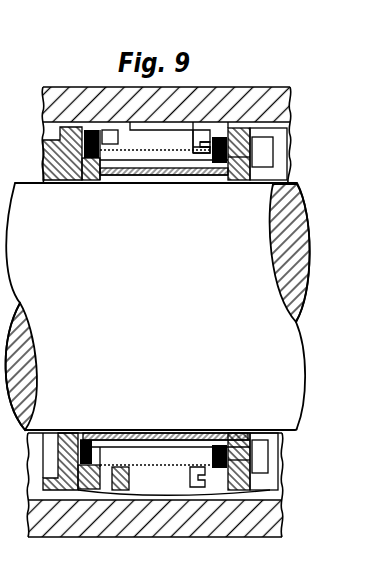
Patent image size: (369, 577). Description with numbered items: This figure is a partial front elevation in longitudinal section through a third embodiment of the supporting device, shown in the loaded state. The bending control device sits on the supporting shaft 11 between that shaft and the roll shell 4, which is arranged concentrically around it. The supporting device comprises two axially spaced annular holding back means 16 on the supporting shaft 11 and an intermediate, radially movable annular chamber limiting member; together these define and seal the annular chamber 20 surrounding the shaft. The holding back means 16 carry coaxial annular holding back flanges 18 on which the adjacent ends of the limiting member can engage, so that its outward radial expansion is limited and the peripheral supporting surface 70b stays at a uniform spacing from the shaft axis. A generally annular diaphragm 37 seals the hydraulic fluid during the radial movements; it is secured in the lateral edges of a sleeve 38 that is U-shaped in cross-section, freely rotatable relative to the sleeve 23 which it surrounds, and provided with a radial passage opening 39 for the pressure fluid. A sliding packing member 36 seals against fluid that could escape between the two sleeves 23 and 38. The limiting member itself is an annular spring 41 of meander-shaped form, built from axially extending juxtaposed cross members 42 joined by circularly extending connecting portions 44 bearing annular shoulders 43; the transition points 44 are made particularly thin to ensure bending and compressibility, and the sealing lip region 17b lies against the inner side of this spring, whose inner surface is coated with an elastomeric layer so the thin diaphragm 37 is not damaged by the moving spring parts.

The roll shell 4 is at (283, 92).
The supporting shaft 11 is at (262, 186).
The holding back means 16 is at (60, 160).
The sealing lip 17b is at (186, 184).
The holding back flange 18 is at (88, 135).
The annular chamber 20 is at (132, 165).
The sleeve 23 is at (92, 183).
The sliding packing member 36 is at (274, 180).
The diaphragm 37 is at (107, 170).
The sleeve 38 is at (200, 170).
The radial passage opening 39 is at (167, 170).
The annular spring 41 is at (155, 112).
The cross members 42 is at (166, 119).
The annular shoulders 43 is at (108, 140).
The connecting portions 44 is at (145, 165).
The spacer ring 70b is at (222, 130).